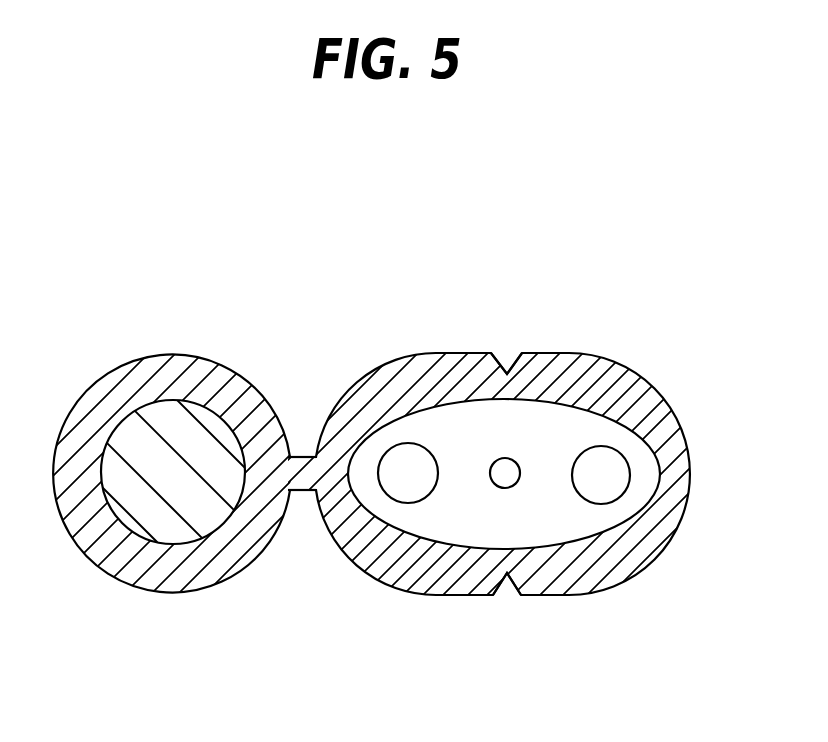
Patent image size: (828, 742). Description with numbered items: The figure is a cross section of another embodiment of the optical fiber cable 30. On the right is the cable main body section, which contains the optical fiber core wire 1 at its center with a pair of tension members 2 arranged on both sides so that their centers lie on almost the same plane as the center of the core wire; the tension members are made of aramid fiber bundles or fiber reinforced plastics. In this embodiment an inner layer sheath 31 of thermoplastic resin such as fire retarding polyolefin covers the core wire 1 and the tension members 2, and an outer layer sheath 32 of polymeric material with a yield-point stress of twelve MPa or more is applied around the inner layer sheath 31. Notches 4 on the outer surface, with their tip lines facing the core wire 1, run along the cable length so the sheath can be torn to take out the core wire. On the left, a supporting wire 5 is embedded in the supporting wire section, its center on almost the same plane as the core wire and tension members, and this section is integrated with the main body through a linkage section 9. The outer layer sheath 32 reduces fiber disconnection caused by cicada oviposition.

The optical fiber cable 30 is at (684, 197).
The outer layer sheath 32 is at (392, 397).
The inner layer sheath 31 is at (485, 417).
The optical fiber core wire 1 is at (525, 472).
The tension member 2 is at (410, 488).
The notch 4 is at (505, 583).
The supporting wire 5 is at (168, 448).
The linkage section 9 is at (320, 468).